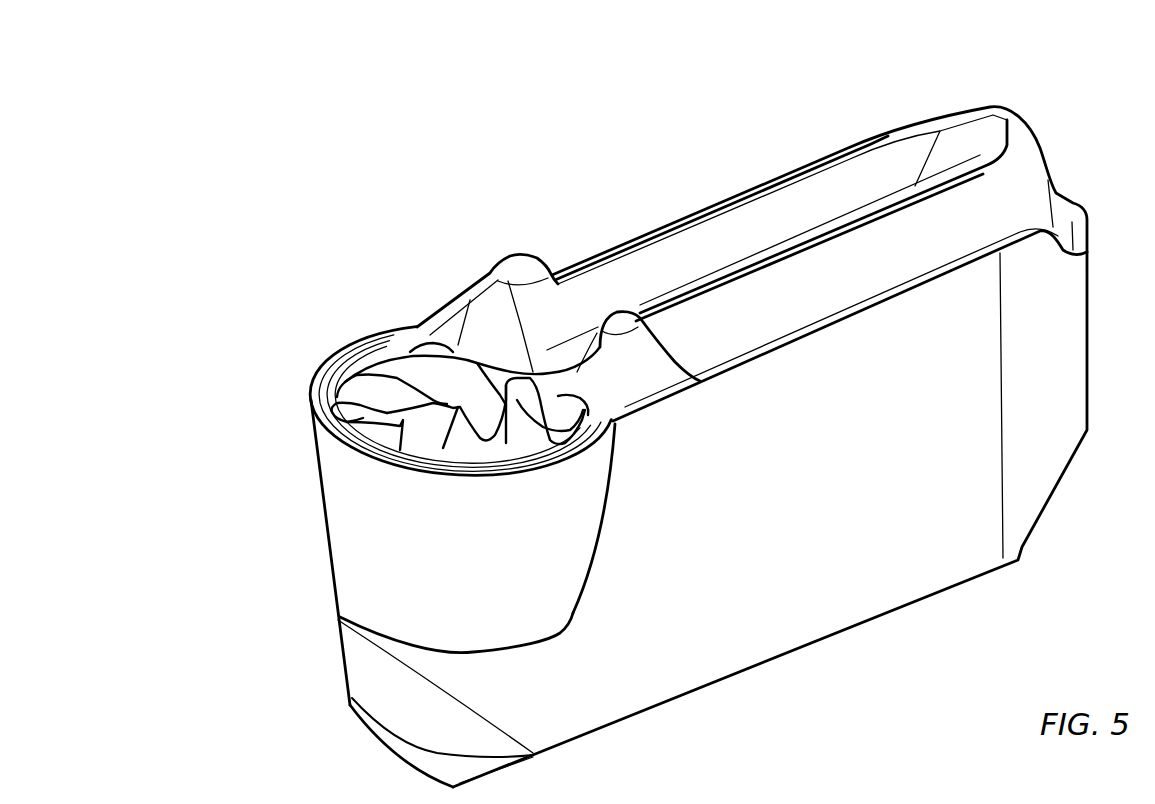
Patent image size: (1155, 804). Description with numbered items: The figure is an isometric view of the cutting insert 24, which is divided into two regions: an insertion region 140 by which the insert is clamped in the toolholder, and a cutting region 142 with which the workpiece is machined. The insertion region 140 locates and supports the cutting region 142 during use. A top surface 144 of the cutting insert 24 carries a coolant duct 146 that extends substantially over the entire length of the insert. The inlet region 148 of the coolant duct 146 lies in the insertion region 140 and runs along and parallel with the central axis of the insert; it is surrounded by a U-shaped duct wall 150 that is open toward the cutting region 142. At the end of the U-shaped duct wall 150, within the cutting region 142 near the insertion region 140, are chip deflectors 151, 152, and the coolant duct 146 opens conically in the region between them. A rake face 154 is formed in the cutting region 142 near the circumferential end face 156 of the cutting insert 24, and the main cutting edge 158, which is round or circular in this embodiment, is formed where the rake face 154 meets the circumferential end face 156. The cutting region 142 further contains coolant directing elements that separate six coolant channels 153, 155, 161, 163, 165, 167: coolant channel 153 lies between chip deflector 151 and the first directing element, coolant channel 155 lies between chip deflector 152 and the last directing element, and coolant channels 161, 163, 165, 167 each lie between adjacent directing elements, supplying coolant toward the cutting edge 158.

The cutting insert 24 is at (240, 228).
The insertion region 140 is at (792, 153).
The cutting region 142 is at (354, 305).
The top surface 144 is at (673, 205).
The coolant duct 146 is at (740, 250).
The inlet region 148 is at (952, 135).
The U-shaped duct wall 150 is at (828, 192).
The chip deflector 151 is at (513, 268).
The chip deflector 152 is at (613, 316).
The coolant channel 153 is at (427, 345).
The rake face 154 is at (320, 385).
The coolant channel 155 is at (588, 405).
The circumferential end face 156 is at (340, 518).
The main cutting edge 158 is at (310, 396).
The coolant channel 161 is at (359, 375).
The coolant channel 163 is at (315, 437).
The coolant channel 165 is at (422, 440).
The coolant channel 167 is at (512, 440).